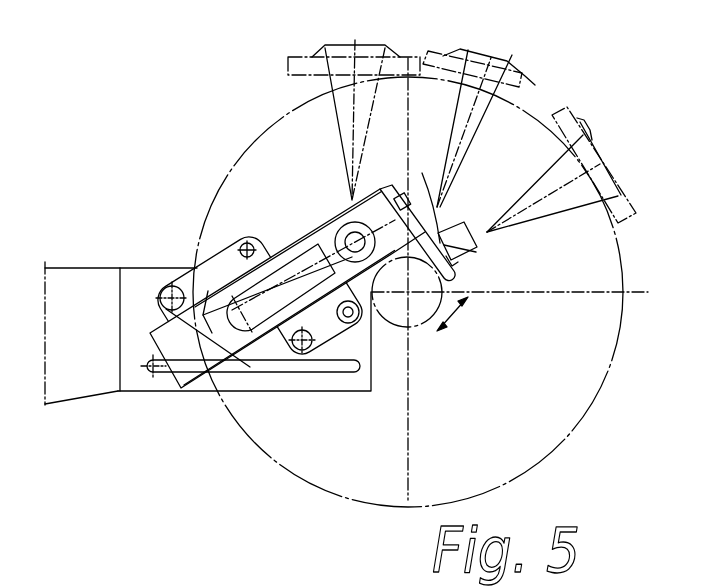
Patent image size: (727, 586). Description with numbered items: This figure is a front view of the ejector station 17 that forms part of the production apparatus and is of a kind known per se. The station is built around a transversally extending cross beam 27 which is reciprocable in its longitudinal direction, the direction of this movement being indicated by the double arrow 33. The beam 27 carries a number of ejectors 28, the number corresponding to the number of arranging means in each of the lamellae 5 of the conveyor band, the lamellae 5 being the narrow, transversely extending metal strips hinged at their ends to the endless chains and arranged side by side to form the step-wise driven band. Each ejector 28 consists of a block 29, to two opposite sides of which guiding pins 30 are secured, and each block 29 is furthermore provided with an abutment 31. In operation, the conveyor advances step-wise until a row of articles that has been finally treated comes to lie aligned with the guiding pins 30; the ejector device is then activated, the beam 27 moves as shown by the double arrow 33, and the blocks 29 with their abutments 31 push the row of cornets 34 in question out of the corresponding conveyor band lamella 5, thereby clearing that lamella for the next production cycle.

The lamella 5 is at (295, 74).
The ejector station 17 is at (210, 194).
The cross beam 27 is at (457, 235).
The ejector 28 is at (457, 257).
The block 29 is at (430, 189).
The guiding pin 30 is at (489, 203).
The abutment 31 is at (497, 248).
The double arrow 33 is at (453, 315).
The cornet 34 is at (555, 202).